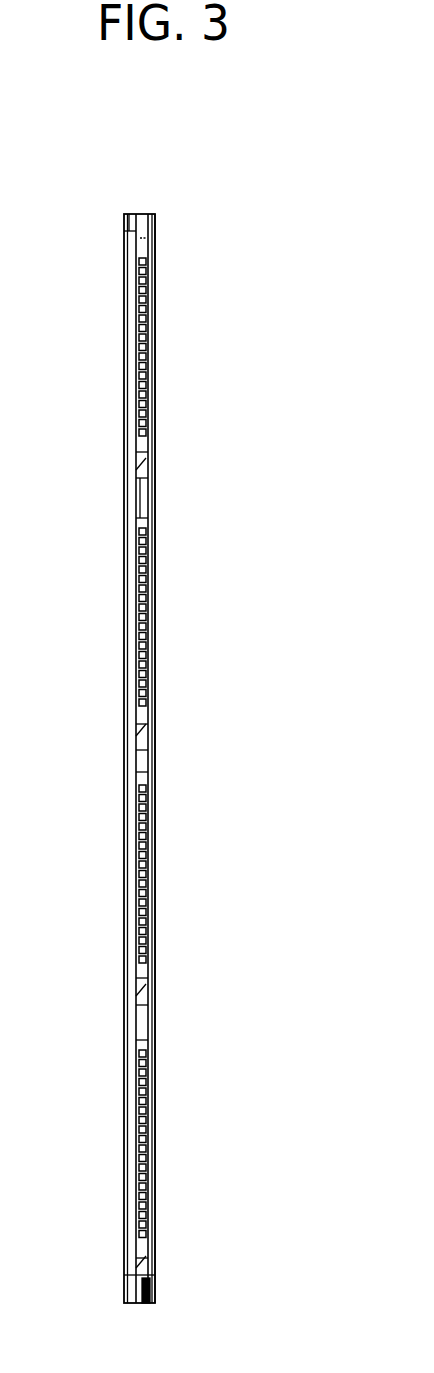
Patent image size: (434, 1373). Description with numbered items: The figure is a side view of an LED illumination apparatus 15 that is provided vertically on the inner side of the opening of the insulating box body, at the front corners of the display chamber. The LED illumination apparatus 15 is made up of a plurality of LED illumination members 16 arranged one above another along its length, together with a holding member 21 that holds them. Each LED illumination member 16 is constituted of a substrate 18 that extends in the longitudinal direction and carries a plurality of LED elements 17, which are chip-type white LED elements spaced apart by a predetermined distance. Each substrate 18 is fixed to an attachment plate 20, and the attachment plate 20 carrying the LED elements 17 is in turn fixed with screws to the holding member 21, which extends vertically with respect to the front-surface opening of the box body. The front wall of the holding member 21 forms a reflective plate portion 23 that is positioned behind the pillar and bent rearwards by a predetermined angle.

The LED illumination apparatus 15 is at (221, 226).
The LED illumination member 16 is at (163, 418).
The LED element 17 is at (147, 358).
The substrate 18 is at (147, 302).
The attachment plate 20 is at (140, 462).
The holding member 21 is at (146, 488).
The reflective plate portion 23 is at (131, 583).